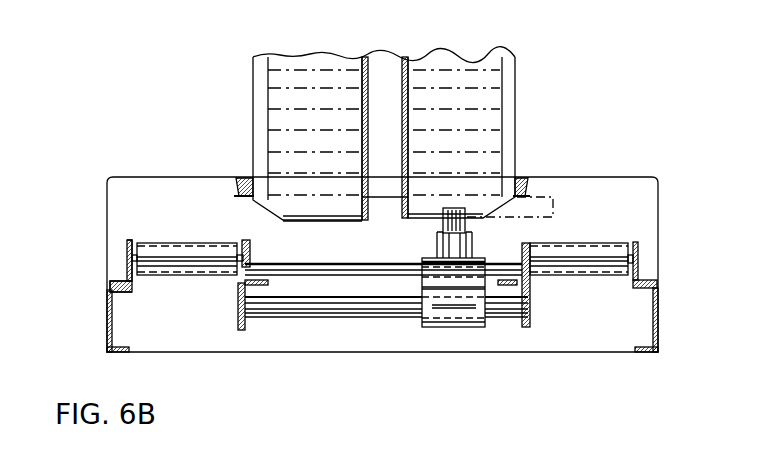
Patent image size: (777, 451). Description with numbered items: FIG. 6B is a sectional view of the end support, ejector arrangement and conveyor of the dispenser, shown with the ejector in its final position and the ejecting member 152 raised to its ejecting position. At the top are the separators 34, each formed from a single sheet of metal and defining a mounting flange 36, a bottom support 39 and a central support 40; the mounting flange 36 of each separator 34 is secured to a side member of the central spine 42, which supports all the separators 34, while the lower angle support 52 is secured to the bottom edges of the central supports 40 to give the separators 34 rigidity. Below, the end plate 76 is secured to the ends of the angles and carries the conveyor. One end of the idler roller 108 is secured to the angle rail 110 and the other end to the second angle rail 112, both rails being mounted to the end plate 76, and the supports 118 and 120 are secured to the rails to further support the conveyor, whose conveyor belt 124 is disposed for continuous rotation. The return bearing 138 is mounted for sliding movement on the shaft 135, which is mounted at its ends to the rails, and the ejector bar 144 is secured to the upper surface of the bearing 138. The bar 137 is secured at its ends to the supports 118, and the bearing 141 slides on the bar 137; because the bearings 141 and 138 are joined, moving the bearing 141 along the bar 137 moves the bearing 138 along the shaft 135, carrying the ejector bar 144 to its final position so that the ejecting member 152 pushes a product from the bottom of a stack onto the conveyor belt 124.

The separator 34 is at (252, 108).
The mounting flange 36 is at (370, 72).
The bottom support 39 is at (354, 223).
The central support 40 is at (262, 78).
The central spine 42 is at (383, 102).
The lower angle support 52 is at (238, 195).
The end plate 76 is at (150, 183).
The idler roller 108 is at (162, 255).
The angle rail 110 is at (125, 273).
The second angle rail 112 is at (258, 244).
The support 118 is at (237, 307).
The support 120 is at (108, 323).
The conveyor belt 124 is at (183, 277).
The shaft 135 is at (300, 267).
The bar 137 is at (302, 308).
The return bearing 138 is at (428, 278).
The bearing 141 is at (453, 327).
The ejector bar 144 is at (472, 243).
The ejecting member 152 is at (443, 220).